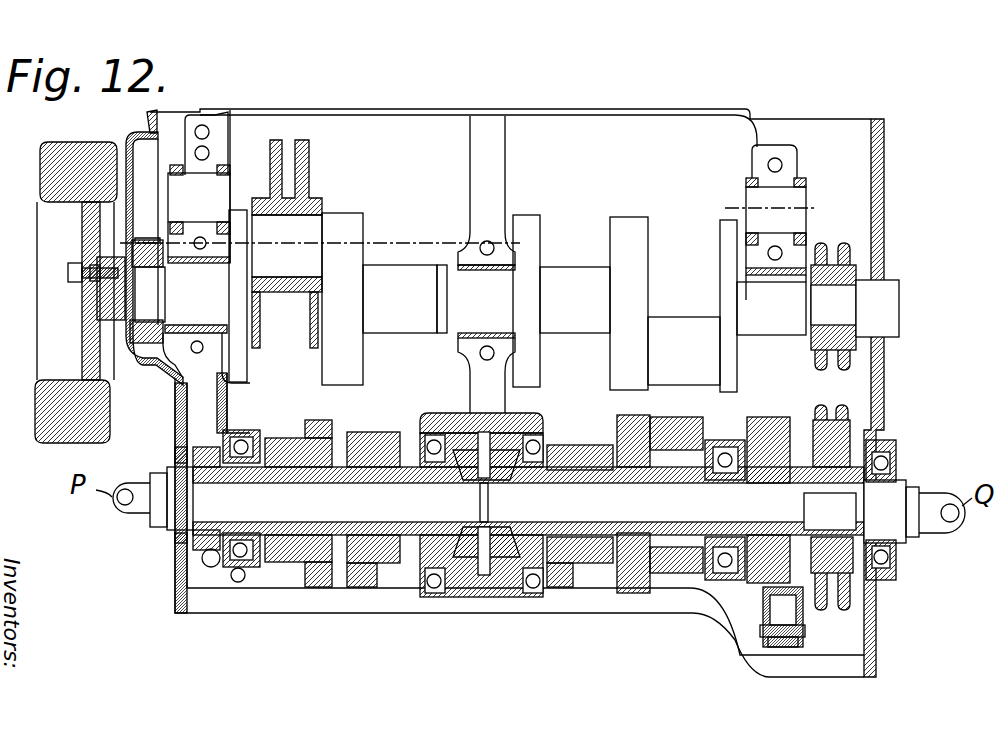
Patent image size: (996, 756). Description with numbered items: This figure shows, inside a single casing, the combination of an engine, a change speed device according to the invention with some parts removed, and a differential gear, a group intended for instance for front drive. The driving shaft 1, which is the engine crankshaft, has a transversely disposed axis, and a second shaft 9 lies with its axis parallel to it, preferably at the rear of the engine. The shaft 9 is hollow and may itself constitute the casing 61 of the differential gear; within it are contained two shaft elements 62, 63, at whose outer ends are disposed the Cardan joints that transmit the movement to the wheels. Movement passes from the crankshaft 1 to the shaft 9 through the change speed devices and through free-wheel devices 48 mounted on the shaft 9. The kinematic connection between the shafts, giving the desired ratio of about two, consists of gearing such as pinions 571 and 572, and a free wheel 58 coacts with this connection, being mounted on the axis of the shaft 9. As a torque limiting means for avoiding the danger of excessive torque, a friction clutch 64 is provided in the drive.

The driving shaft 1 is at (560, 290).
The shaft 9 is at (600, 478).
The free-wheel devices 48 is at (295, 548).
The pinion 571 is at (853, 367).
The pinion 572 is at (846, 413).
The free wheel 58 is at (854, 450).
The casing of the differential gear 61 is at (500, 565).
The shaft element 62 is at (232, 578).
The shaft element 63 is at (702, 580).
The friction clutch 64 is at (766, 647).